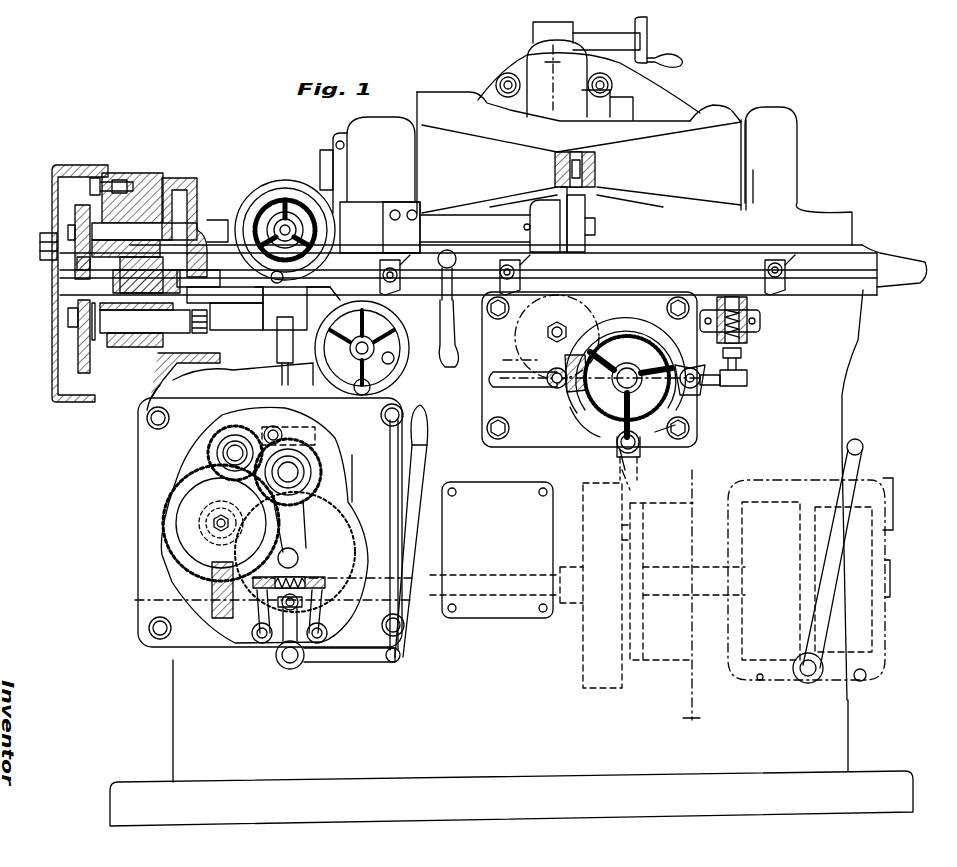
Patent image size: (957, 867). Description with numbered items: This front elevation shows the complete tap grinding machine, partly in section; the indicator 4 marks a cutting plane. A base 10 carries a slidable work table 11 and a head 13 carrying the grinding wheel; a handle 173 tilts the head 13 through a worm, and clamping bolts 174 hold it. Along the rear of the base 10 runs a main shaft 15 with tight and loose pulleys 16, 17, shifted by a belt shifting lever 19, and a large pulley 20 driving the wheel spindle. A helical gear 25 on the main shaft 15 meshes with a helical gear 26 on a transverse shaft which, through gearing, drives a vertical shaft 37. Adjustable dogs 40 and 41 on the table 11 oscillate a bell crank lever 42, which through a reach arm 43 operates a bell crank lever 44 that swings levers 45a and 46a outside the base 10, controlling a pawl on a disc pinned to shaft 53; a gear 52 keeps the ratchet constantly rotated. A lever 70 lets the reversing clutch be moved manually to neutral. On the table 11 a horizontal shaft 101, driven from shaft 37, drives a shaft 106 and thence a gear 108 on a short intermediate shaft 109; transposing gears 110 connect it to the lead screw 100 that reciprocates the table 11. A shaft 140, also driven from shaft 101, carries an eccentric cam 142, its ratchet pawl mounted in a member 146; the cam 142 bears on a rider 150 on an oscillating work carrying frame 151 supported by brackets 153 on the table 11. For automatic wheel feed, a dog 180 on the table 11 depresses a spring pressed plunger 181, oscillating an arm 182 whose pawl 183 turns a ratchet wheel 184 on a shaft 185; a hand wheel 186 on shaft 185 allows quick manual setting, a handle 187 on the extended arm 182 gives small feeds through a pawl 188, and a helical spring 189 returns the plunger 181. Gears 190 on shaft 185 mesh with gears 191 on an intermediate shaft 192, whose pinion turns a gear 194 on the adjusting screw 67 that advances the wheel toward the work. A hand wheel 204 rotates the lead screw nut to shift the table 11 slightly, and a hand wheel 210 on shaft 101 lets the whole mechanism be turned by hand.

The section line 4 is at (629, 388).
The base 10 is at (173, 699).
The longitudinally slidable table 11 is at (870, 262).
The head 13 is at (480, 100).
The main shaft 15 is at (680, 640).
The tight pulley 16 is at (760, 502).
The loose pulley 17 is at (872, 512).
The belt shifting lever 19 is at (840, 560).
The large pulley 20 is at (595, 672).
The helical gear 25 is at (215, 590).
The mating helical gear 26 is at (165, 523).
The vertically extending shaft 37 is at (278, 345).
The adjustable dog 40 is at (492, 270).
The adjustable dog 41 is at (405, 285).
The bell crank lever 42 is at (462, 350).
The reach arm 43 is at (395, 572).
The bell crank lever 44 is at (314, 670).
The lever 45a is at (252, 605).
The lever 46a is at (340, 660).
The gear 52 is at (322, 505).
The shaft 53 is at (294, 556).
The adjusting screw 67 is at (561, 319).
The lever 70 is at (410, 452).
The lead screw 100 is at (200, 365).
The horizontal shaft 101 is at (275, 215).
The shaft 106 is at (210, 218).
The gear 108 is at (185, 182).
The short intermediate shaft 109 is at (132, 228).
The transposing gears 110 is at (75, 210).
The shaft 140 is at (440, 218).
The eccentric cam 142 is at (600, 200).
The member 146 is at (408, 208).
The rider 150 is at (592, 160).
The oscillating work carrying frame 151 is at (715, 120).
The brackets 153 is at (380, 125).
The handle 173 is at (647, 45).
The clamping bolts 174 is at (508, 73).
The dog 180 is at (780, 290).
The spring pressed plunger 181 is at (705, 300).
The arm 182 is at (725, 385).
The pawl 183 is at (698, 392).
The ratchet wheel 184 is at (675, 445).
The shaft 185 is at (623, 388).
The hand wheel 186 is at (573, 417).
The handle 187 is at (420, 403).
The pawl 188 is at (545, 352).
The small helical spring 189 is at (742, 340).
The gears 190 is at (610, 350).
The gears 191 is at (543, 403).
The intermediate shaft 192 is at (550, 385).
The gear 194 is at (582, 317).
The hand wheel 204 is at (350, 388).
The hand wheel 210 is at (280, 178).